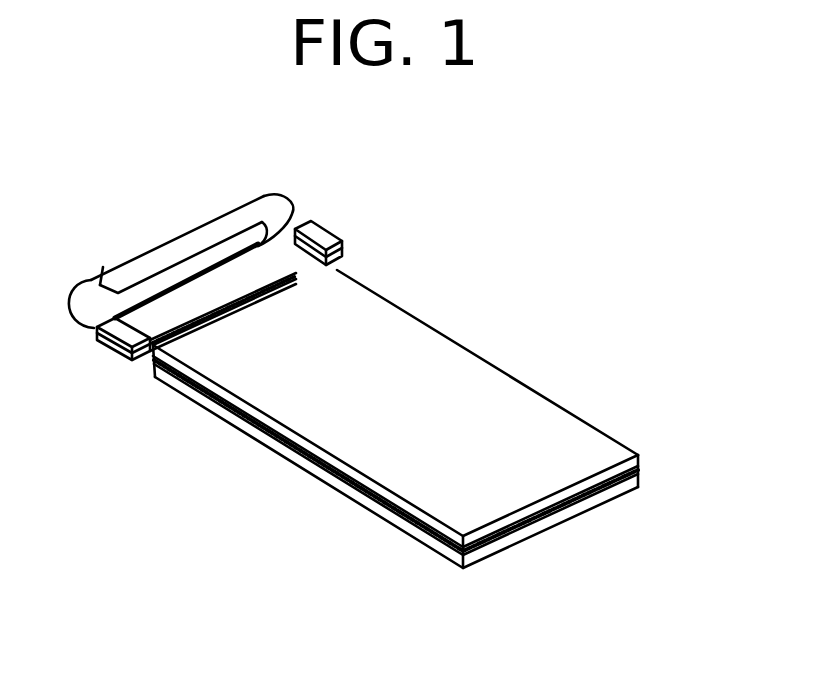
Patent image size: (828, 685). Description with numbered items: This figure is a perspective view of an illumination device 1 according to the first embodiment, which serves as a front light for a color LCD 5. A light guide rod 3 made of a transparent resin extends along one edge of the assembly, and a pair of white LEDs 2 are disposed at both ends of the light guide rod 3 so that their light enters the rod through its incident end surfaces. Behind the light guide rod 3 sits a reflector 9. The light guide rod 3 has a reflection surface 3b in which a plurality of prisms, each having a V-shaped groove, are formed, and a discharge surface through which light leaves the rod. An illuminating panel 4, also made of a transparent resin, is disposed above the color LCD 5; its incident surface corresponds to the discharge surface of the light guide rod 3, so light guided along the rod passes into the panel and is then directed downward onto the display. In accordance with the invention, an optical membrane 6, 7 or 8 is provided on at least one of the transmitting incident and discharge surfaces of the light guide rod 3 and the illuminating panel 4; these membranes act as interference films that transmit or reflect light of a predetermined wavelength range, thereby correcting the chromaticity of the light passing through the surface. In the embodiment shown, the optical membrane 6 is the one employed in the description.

The illumination device 1 is at (452, 301).
The white LED 2 is at (327, 237).
The light guide rod 3 is at (345, 250).
The reflection surface 3b is at (160, 298).
The illuminating panel 4 is at (458, 353).
The color LCD 5 is at (297, 463).
The optical membrane 6 is at (310, 222).
The optical membrane 7 is at (360, 278).
The optical membrane 8 is at (233, 417).
The reflector 9 is at (174, 246).